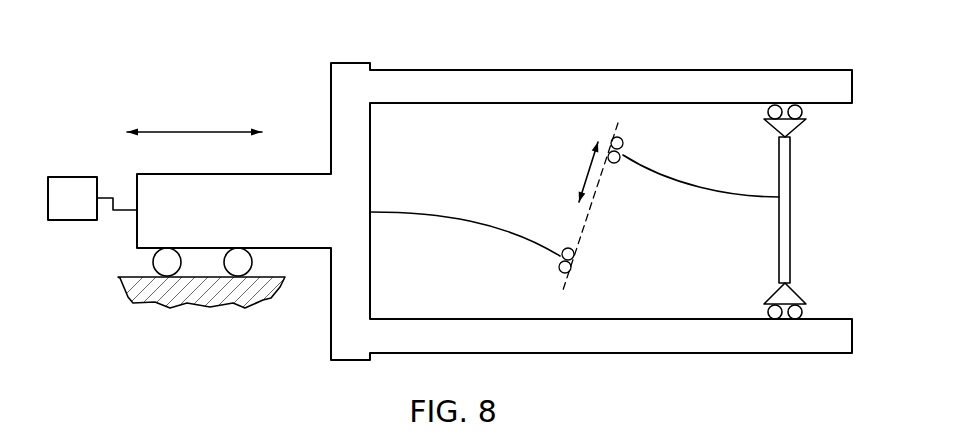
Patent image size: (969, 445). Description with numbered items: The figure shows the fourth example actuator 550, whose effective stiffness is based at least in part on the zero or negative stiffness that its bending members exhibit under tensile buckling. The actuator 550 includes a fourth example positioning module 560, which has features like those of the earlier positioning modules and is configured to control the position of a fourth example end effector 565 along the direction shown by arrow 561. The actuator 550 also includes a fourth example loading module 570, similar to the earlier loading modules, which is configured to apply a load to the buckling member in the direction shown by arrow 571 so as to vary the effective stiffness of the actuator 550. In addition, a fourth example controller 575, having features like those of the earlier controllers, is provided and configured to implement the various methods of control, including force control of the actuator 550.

The fourth example actuator 550 is at (124, 76).
The fourth example positioning module 560 is at (212, 224).
The arrow 561 is at (193, 132).
The fourth example end effector 565 is at (791, 197).
The fourth example loading module 570 is at (802, 223).
The arrow 571 is at (588, 173).
The fourth example controller 575 is at (92, 209).